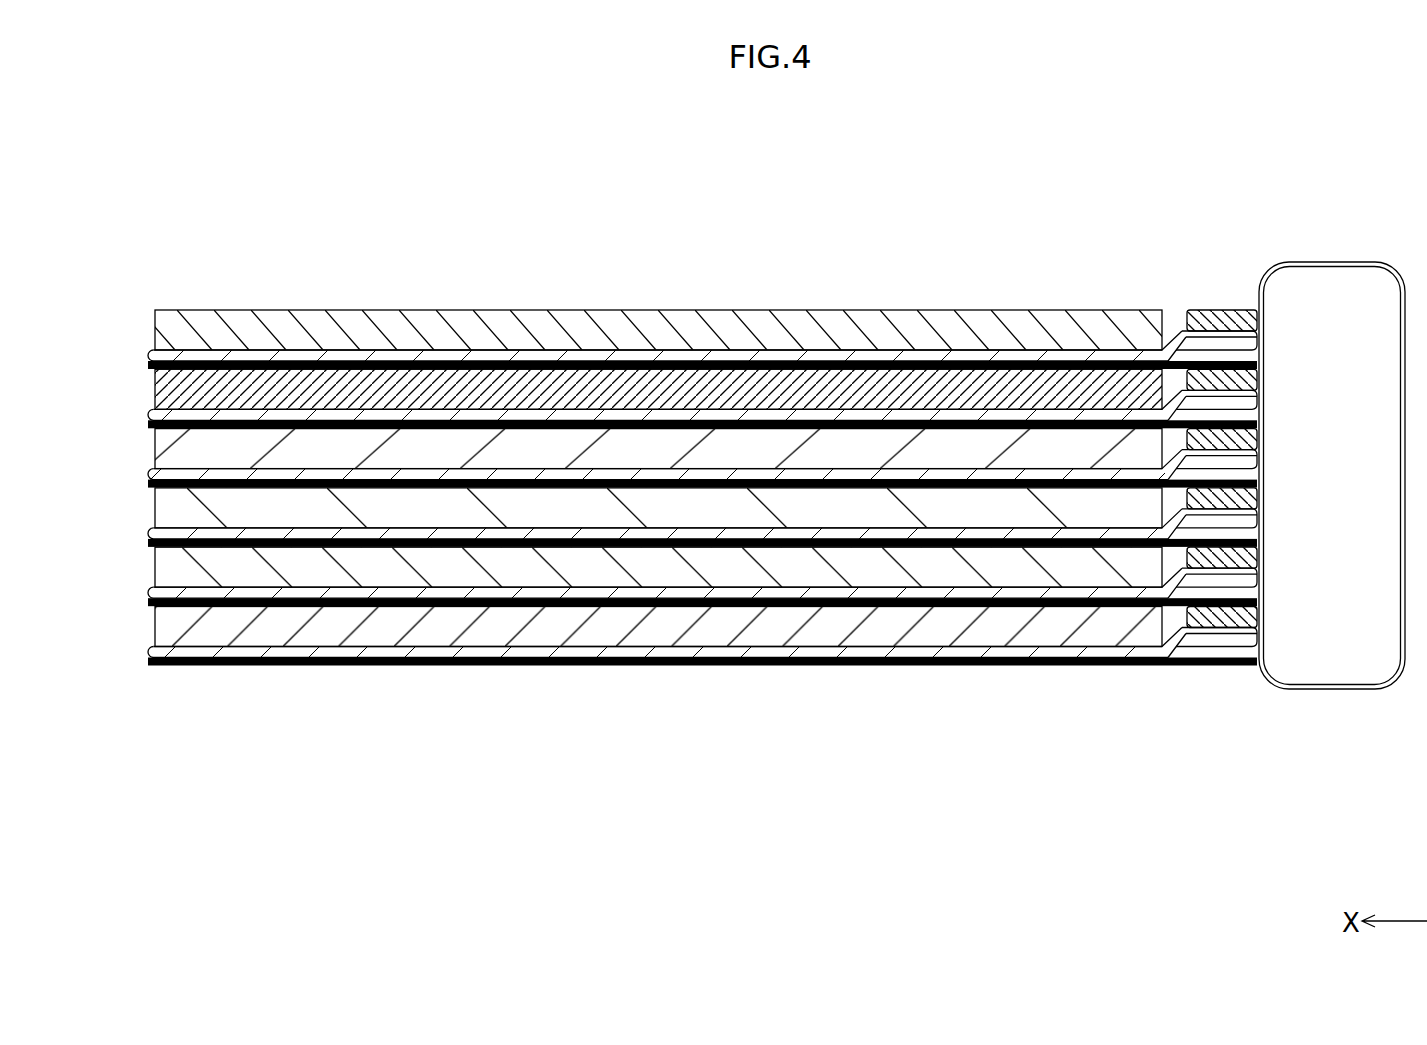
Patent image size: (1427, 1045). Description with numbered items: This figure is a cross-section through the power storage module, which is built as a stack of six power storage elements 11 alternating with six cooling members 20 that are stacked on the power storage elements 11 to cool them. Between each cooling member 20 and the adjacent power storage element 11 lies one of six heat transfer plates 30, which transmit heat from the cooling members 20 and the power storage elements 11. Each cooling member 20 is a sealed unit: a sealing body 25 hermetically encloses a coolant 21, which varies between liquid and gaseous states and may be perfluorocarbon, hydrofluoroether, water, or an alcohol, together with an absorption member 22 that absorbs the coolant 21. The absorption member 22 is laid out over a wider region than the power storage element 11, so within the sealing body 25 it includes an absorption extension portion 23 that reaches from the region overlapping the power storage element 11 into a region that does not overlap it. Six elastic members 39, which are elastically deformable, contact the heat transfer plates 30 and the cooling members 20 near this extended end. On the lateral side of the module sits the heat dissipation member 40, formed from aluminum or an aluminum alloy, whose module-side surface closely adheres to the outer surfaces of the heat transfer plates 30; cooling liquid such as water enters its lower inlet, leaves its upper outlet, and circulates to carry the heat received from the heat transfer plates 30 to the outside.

The power storage element 11 is at (702, 448).
The cooling member 20 is at (147, 355).
The coolant 21 is at (1255, 459).
The absorption member 22 is at (827, 480).
The absorption extension portion 23 is at (1178, 455).
The sealing body 25 is at (1002, 472).
The heat transfer plate 30 is at (147, 365).
The elastic member 39 is at (1232, 405).
The heat dissipation member 40 is at (1367, 265).